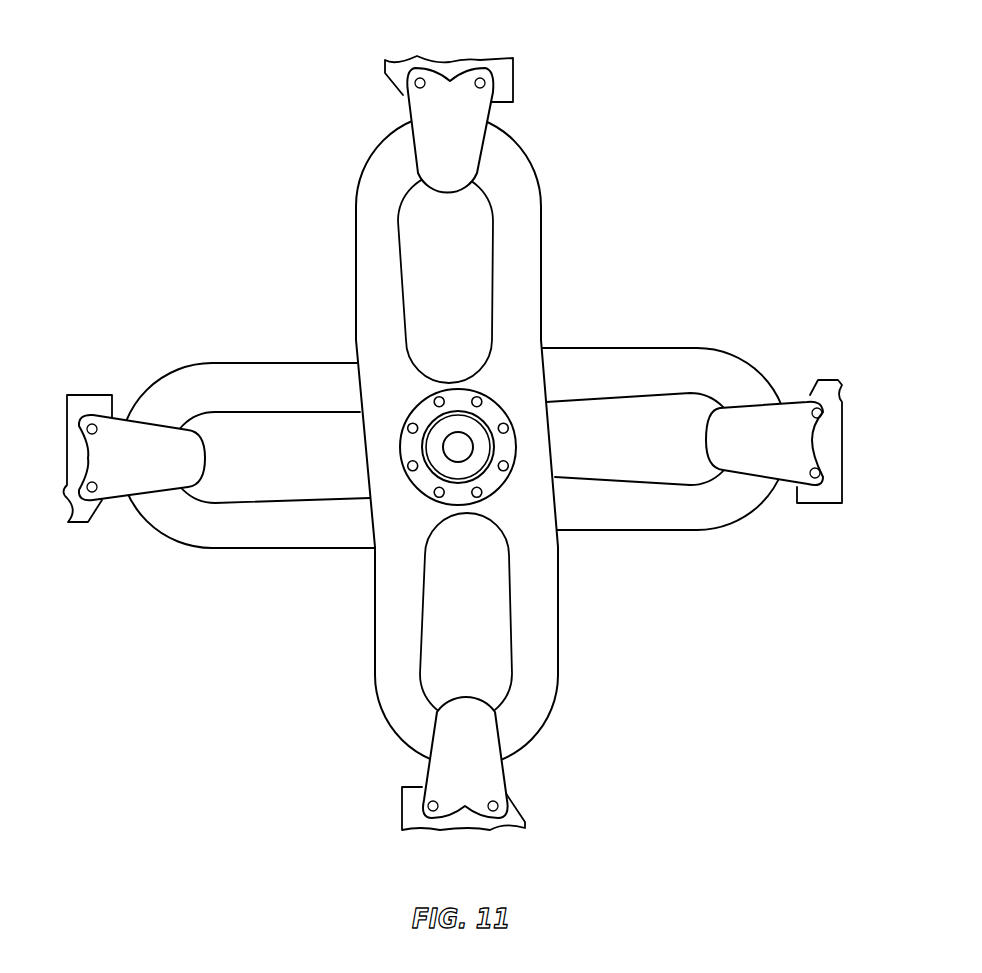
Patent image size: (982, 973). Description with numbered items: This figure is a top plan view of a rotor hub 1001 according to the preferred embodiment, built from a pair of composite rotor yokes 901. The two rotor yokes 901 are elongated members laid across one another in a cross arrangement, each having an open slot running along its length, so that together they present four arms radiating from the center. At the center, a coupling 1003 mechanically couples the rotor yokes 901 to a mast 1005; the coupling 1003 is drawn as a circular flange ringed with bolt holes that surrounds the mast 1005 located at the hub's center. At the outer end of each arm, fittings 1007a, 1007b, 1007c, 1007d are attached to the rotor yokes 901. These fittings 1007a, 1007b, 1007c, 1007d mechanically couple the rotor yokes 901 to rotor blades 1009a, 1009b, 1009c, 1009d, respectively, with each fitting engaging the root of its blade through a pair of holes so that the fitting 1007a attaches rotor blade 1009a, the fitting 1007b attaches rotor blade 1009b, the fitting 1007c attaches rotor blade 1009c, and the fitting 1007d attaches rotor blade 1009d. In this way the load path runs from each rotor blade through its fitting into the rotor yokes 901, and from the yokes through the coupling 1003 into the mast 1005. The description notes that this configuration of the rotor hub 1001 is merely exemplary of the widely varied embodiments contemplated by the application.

The rotor hub 1001 is at (453, 430).
The rotor yoke 901 is at (530, 282).
The coupling 1003 is at (495, 412).
The mast 1005 is at (460, 448).
The fitting 1007a is at (500, 789).
The fitting 1007b is at (183, 473).
The fitting 1007c is at (480, 118).
The fitting 1007d is at (805, 453).
The rotor blade 1009a is at (525, 813).
The rotor blade 1009b is at (83, 402).
The rotor blade 1009c is at (507, 70).
The rotor blade 1009d is at (833, 494).